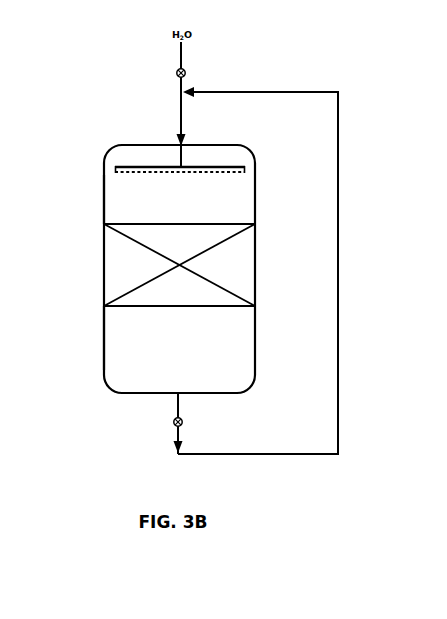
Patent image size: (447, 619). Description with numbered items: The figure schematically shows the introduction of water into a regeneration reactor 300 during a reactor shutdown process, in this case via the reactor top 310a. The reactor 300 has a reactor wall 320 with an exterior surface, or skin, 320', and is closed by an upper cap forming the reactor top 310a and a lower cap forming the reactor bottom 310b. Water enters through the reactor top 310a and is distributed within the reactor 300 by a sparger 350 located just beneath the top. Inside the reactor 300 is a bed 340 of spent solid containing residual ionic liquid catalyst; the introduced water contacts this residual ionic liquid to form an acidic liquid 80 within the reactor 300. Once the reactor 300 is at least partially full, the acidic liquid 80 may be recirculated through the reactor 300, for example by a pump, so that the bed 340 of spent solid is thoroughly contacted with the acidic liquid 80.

The regeneration reactor 300 is at (172, 203).
The reactor top 310a is at (121, 138).
The reactor bottom 310b is at (112, 402).
The sparger 350 is at (116, 157).
The reactor wall 320 is at (59, 199).
The bed 340 is at (128, 263).
The exterior surface 320' is at (62, 338).
The acidic liquid 80 is at (275, 83).